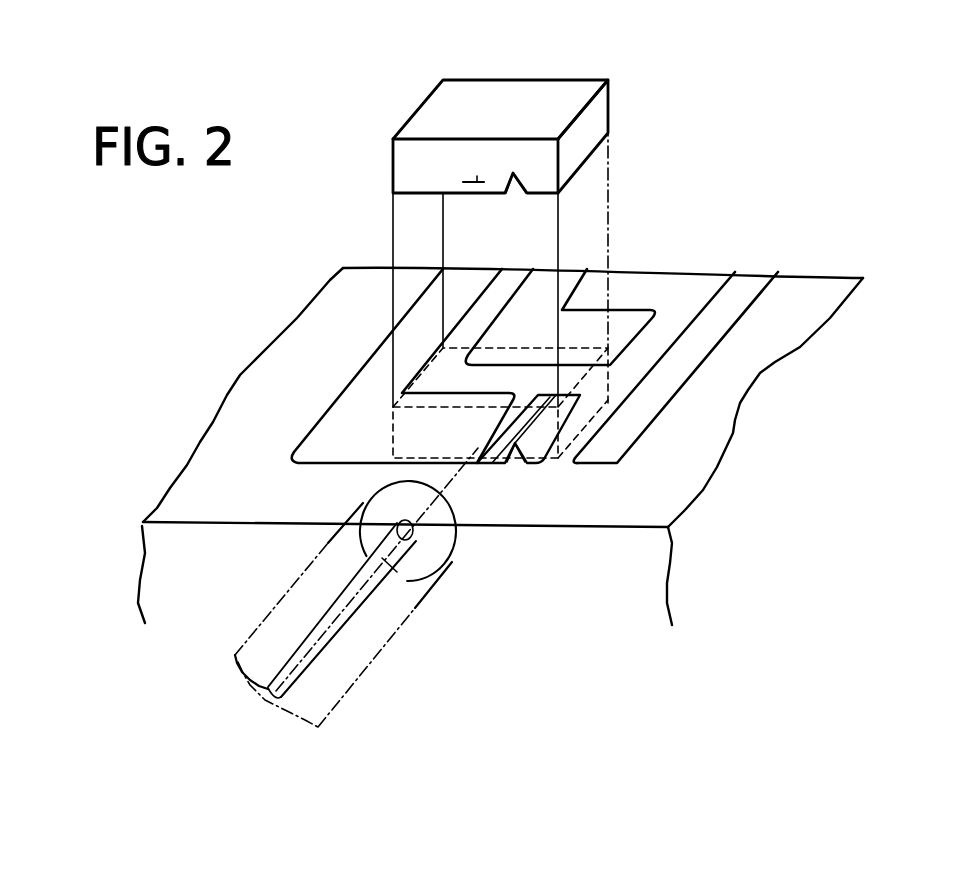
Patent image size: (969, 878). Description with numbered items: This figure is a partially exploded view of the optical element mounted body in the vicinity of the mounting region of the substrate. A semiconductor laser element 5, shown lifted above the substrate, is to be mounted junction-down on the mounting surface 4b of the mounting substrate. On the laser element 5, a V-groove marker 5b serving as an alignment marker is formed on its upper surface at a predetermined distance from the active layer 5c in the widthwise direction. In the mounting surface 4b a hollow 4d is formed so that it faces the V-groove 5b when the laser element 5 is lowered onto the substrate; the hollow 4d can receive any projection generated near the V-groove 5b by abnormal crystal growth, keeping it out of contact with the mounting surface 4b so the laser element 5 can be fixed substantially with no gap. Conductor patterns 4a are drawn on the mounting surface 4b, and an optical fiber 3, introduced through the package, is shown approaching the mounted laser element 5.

The optical fiber 3 is at (393, 640).
The conductor pattern 4a is at (465, 287).
The mounting surface 4b is at (280, 390).
The hollow 4d is at (550, 413).
The semiconductor laser element 5 is at (553, 80).
The V-groove marker 5b is at (527, 192).
The active layer 5c is at (477, 176).